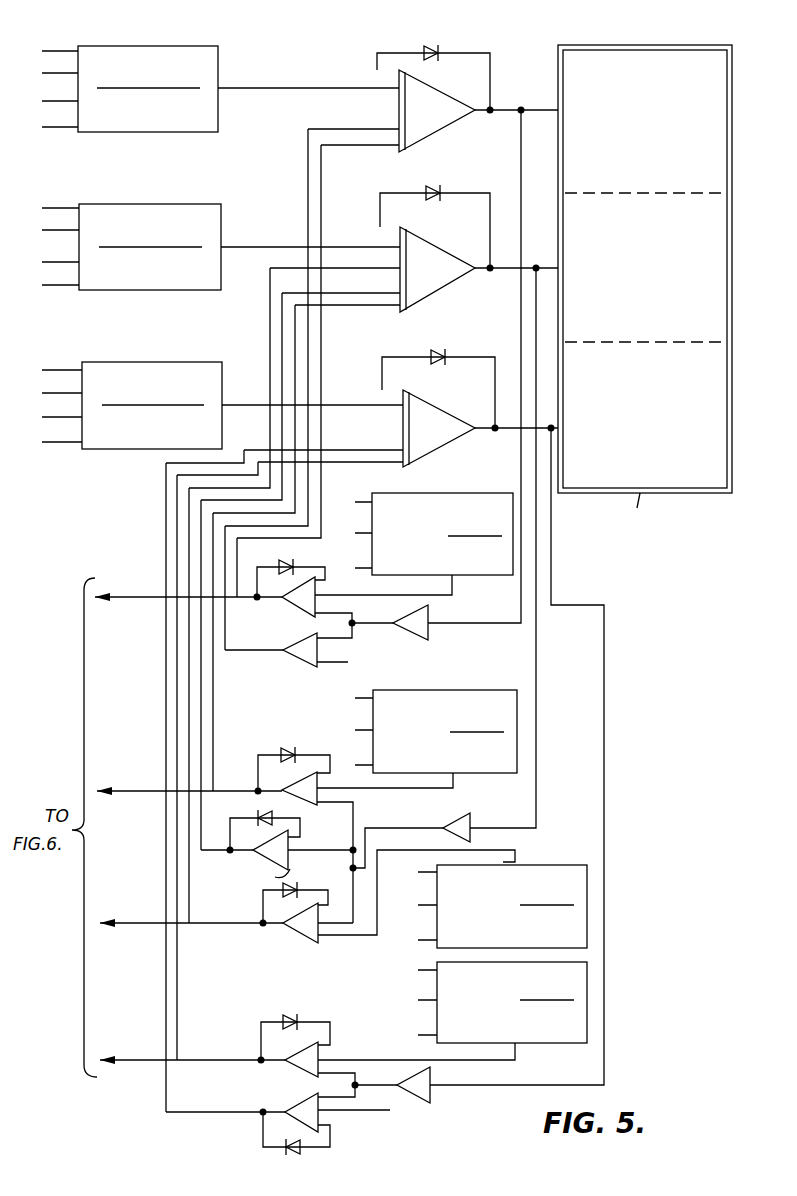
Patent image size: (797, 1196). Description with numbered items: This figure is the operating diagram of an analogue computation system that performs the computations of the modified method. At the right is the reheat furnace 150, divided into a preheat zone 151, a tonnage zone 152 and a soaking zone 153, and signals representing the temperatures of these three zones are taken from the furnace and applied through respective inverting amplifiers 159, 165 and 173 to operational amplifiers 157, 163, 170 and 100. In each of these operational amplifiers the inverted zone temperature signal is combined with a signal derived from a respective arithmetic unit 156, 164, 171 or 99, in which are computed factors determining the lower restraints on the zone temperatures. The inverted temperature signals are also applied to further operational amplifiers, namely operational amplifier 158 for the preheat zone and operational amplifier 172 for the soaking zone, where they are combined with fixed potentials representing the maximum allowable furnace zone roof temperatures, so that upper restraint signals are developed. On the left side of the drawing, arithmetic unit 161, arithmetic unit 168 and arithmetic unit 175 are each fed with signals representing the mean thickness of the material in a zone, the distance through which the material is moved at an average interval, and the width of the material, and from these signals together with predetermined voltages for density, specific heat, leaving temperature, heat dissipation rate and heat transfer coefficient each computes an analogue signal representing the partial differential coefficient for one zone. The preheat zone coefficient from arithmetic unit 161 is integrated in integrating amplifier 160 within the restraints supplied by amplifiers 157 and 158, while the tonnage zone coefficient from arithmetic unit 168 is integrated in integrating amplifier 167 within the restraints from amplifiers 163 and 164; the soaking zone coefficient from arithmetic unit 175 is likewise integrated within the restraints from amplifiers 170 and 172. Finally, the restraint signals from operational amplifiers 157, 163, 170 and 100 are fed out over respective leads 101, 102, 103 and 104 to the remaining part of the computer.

The arithmetic unit 99 is at (564, 865).
The operational amplifier 100 is at (291, 934).
The lead 101 is at (176, 585).
The lead 102 is at (177, 779).
The lead 103 is at (180, 1048).
The lead 104 is at (181, 911).
The reheat furnace 150 is at (645, 45).
The preheat zone 151 is at (659, 185).
The tonnage zone 152 is at (659, 317).
The soaking zone 153 is at (659, 468).
The arithmetic unit 156 is at (432, 493).
The operational amplifier 157 is at (288, 603).
The operational amplifier 158 is at (286, 643).
The inverting amplifier 159 is at (402, 620).
The integrating operational amplifier 160 is at (437, 121).
The arithmetic unit 161 is at (161, 46).
The operational amplifier 163 is at (302, 803).
The arithmetic unit 164 is at (475, 683).
The inverting amplifier 165 is at (452, 826).
The integrating operational amplifier 167 is at (437, 279).
The arithmetic unit 168 is at (212, 237).
The operational amplifier 170 is at (296, 1064).
The arithmetic unit 171 is at (550, 1045).
The operational amplifier 172 is at (296, 1105).
The inverting amplifier 173 is at (443, 432).
The arithmetic unit 175 is at (213, 395).